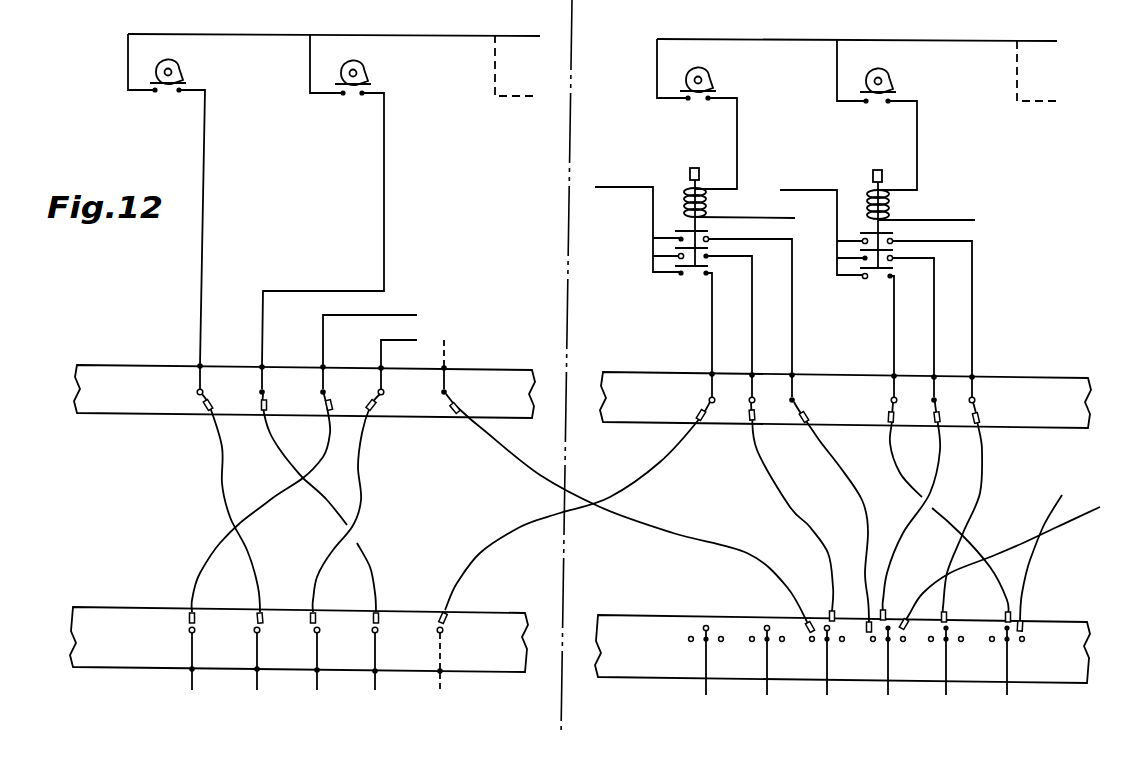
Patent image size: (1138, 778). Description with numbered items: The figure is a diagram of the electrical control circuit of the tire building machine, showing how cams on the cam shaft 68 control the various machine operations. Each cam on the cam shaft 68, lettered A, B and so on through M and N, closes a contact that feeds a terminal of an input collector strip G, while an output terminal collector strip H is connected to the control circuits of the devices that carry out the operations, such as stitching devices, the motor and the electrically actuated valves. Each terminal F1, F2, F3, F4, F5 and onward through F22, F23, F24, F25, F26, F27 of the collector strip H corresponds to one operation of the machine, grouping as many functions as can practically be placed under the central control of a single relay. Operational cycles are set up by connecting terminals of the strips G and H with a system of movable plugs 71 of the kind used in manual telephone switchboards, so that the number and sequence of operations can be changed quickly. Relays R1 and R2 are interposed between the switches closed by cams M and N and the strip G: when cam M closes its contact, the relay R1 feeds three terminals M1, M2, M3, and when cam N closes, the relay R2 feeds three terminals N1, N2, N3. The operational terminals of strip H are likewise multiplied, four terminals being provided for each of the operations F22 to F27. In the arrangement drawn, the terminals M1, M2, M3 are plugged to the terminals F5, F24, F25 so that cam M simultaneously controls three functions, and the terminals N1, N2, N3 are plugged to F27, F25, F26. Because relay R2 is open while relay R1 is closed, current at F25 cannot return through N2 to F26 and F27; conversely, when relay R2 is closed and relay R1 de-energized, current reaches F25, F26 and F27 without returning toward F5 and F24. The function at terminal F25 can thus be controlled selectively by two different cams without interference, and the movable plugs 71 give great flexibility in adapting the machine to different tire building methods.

The cam shaft 68 is at (539, 64).
The movable plugs 71 is at (645, 513).
The relay R1 is at (695, 259).
The relay R2 is at (877, 260).
The input collector strip G is at (304, 390).
The output terminal collector strip H is at (299, 639).
The terminal M1 is at (695, 391).
The terminal M2 is at (735, 391).
The terminal M3 is at (775, 391).
The terminal N1 is at (878, 392).
The terminal N2 is at (917, 392).
The terminal N3 is at (987, 392).
The terminal F1 is at (176, 658).
The terminal F2 is at (240, 658).
The terminal F3 is at (300, 658).
The terminal F4 is at (359, 658).
The terminal F5 is at (423, 658).
The terminal F22 is at (711, 660).
The terminal F23 is at (773, 660).
The terminal F24 is at (833, 660).
The terminal F25 is at (894, 660).
The terminal F26 is at (952, 660).
The terminal F27 is at (1013, 660).